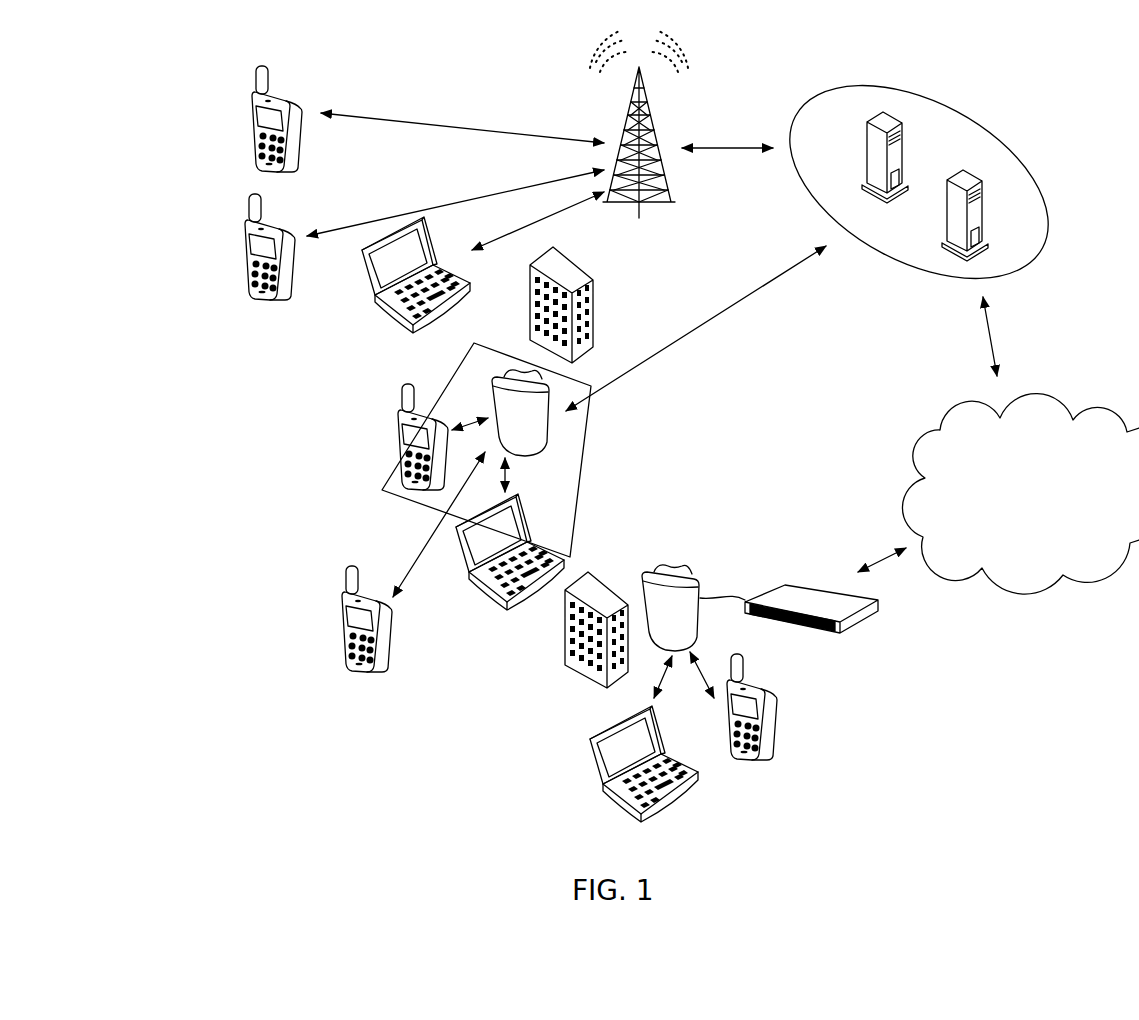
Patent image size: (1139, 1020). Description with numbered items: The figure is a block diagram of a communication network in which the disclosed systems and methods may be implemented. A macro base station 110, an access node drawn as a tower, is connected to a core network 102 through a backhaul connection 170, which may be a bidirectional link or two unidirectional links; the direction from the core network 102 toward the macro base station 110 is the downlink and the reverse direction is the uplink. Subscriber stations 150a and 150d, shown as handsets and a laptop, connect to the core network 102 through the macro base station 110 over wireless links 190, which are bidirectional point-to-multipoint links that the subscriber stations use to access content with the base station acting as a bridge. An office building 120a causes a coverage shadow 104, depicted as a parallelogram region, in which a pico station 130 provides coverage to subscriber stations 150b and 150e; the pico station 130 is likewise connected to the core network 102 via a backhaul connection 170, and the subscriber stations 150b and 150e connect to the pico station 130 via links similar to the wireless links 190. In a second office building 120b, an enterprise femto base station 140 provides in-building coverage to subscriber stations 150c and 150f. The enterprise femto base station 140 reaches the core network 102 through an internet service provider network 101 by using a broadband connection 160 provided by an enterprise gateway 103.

The internet service provider network 101 is at (912, 453).
The core network 102 is at (1010, 148).
The enterprise gateway 103 is at (868, 625).
The coverage shadow 104 is at (578, 477).
The macro base station 110 is at (655, 143).
The office building 120a is at (595, 310).
The office building 120b is at (565, 637).
The pico station 130 is at (490, 380).
The enterprise femto base station 140 is at (700, 578).
The subscriber station 150a is at (252, 212).
The subscriber station 150b is at (342, 594).
The subscriber station 150c is at (777, 713).
The subscriber station 150d is at (380, 308).
The subscriber station 150e is at (532, 518).
The subscriber station 150f is at (590, 743).
The broadband connection 160 is at (892, 556).
The backhaul connection 170 is at (748, 150).
The wireless links 190 is at (413, 209).